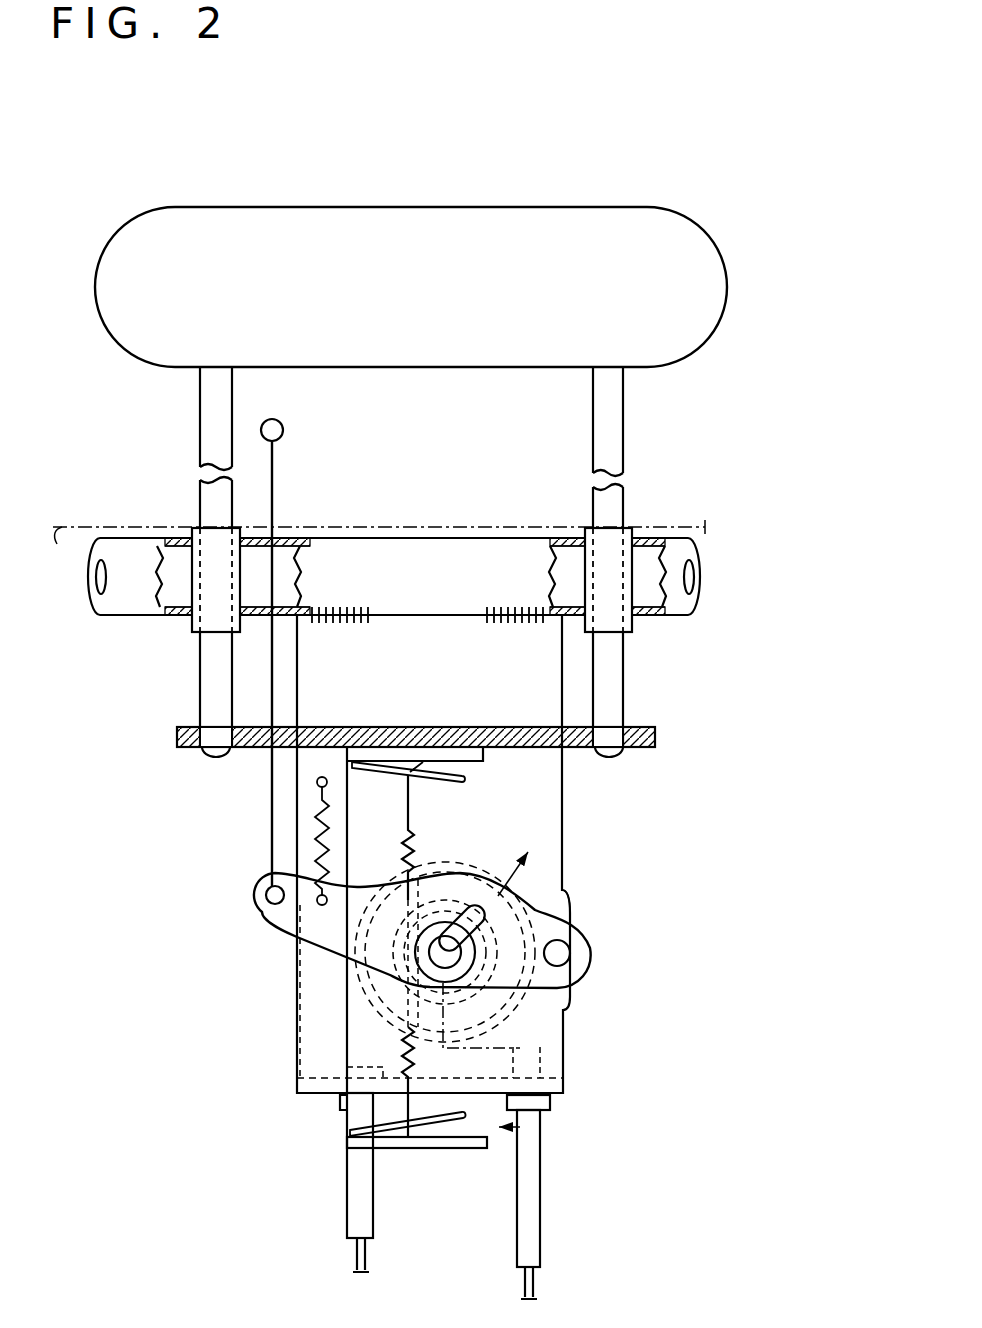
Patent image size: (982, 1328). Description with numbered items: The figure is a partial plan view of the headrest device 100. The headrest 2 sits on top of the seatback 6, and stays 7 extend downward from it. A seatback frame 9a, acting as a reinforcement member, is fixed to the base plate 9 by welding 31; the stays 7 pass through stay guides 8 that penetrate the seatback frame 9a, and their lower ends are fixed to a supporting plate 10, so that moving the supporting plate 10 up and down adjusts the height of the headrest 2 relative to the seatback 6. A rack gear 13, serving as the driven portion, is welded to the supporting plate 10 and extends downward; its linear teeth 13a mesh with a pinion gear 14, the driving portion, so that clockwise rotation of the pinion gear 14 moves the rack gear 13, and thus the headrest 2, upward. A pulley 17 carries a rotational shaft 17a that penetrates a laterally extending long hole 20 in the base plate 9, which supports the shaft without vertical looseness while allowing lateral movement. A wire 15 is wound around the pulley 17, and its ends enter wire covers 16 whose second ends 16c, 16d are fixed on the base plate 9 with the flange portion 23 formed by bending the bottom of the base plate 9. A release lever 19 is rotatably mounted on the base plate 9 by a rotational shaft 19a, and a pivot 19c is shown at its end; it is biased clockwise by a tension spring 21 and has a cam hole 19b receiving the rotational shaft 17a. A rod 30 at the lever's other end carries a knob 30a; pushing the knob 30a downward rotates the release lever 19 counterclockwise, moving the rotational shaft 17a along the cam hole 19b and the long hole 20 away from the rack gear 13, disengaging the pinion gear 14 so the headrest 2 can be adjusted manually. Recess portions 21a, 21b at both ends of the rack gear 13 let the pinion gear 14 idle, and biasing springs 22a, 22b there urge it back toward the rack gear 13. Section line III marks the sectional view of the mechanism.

The headrest 2 is at (697, 262).
The stays 7 is at (200, 700).
The seatback 6 is at (485, 527).
The seatback frame 9a is at (96, 548).
The welding 31 is at (352, 597).
The stay guides 8 is at (192, 627).
The supporting plate 10 is at (177, 737).
The rod 30 is at (270, 790).
The knob 30a is at (284, 432).
The base plate 9 is at (297, 967).
The flange portion 23 is at (297, 1092).
The tension spring 21 is at (318, 832).
The biasing spring 22b is at (465, 778).
The recess portion 21b is at (416, 797).
The rack gear 13 is at (392, 1036).
The linear teeth 13a is at (406, 1057).
The release lever 19 is at (258, 906).
The pivot pin 19c is at (266, 888).
The pulley 17 is at (545, 905).
The cam hole 19b is at (473, 917).
The rotational shaft 17a is at (572, 928).
The rotational shaft 19a is at (565, 957).
The long hole 20 is at (572, 988).
The pinion gear 14 is at (548, 1040).
The section line III is at (500, 981).
The biasing spring 22a is at (455, 1138).
The recess portion 21a is at (428, 1122).
The second end of wire cover 16c is at (340, 1100).
The second end of wire cover 16d is at (550, 1103).
The wire covers 16 is at (348, 1193).
The wire 15 is at (356, 1262).
The headrest device 100 is at (688, 972).